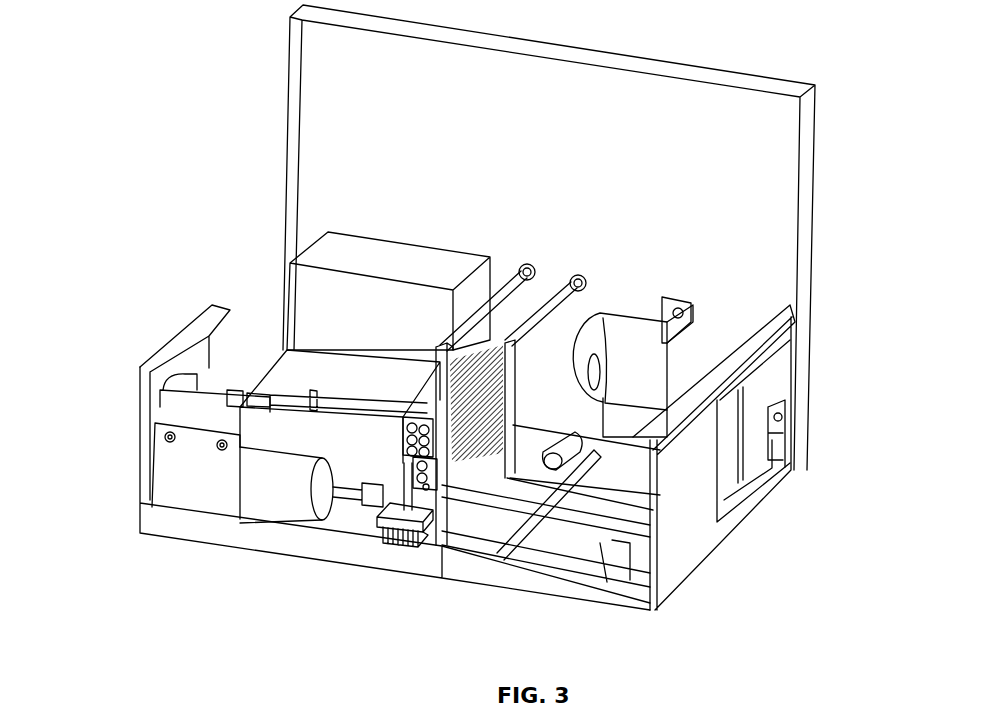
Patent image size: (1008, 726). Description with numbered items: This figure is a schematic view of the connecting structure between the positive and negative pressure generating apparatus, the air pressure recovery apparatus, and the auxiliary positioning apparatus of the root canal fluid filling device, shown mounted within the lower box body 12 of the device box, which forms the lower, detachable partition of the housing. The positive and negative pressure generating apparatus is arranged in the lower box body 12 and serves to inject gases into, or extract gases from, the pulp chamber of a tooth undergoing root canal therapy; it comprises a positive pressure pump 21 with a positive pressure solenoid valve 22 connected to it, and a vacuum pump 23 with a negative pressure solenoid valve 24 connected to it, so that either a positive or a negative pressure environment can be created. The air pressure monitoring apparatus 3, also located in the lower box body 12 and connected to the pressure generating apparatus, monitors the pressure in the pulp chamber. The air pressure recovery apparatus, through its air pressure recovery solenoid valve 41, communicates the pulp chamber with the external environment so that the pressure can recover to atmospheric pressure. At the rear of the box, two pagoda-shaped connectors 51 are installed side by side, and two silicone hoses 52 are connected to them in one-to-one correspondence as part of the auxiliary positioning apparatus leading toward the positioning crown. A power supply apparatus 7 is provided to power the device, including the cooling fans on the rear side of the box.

The lower box body 12 is at (402, 172).
The power supply apparatus 7 is at (287, 367).
The pagoda-shaped connectors 51 is at (525, 272).
The positive pressure pump 21 is at (690, 365).
The positive pressure solenoid valve 22 is at (643, 477).
The air pressure recovery solenoid valve 41 is at (630, 500).
The negative pressure solenoid valve 24 is at (602, 543).
The silicone hoses 52 is at (442, 548).
The air pressure monitoring apparatus 3 is at (383, 537).
The vacuum pump 23 is at (265, 477).